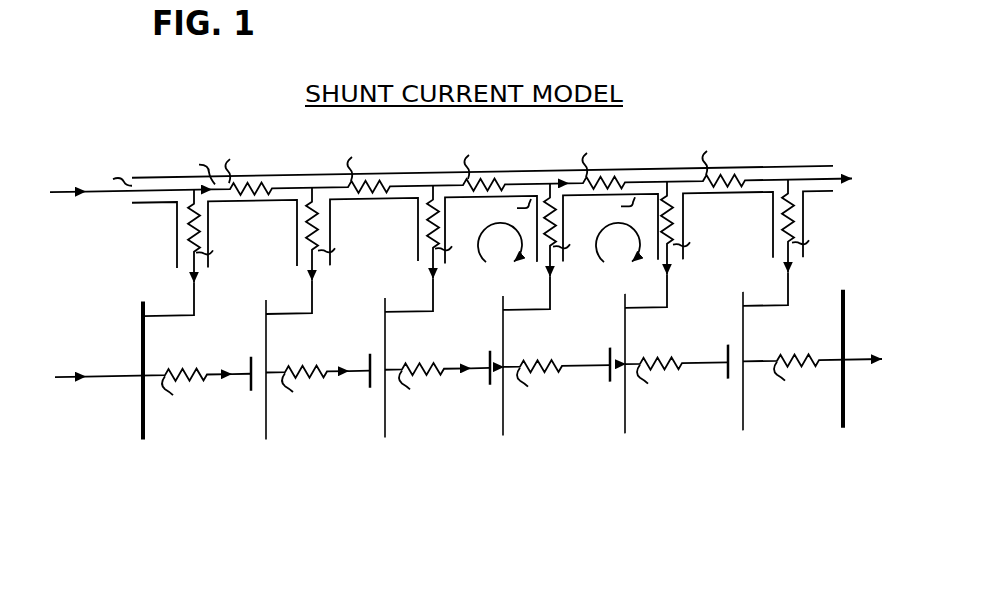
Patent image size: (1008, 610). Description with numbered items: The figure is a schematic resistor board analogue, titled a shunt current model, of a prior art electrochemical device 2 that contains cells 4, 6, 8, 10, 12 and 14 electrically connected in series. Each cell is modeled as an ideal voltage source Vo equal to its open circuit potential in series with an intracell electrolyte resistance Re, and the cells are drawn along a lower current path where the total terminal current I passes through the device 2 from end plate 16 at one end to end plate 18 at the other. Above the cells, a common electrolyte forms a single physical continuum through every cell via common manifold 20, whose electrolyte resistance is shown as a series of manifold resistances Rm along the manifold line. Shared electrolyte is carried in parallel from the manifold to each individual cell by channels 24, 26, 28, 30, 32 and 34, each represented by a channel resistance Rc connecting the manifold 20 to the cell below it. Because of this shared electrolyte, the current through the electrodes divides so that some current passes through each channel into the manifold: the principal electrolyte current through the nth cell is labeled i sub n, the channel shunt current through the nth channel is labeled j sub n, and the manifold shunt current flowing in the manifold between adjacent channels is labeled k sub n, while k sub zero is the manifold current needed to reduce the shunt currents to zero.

The electrochemical device 2 is at (106, 268).
The cell 4 is at (205, 446).
The cell 6 is at (338, 449).
The cell 8 is at (460, 443).
The cell 10 is at (578, 445).
The cell 12 is at (700, 443).
The cell 14 is at (800, 445).
The end plate 16 is at (143, 428).
The end plate 18 is at (845, 420).
The common manifold 20 is at (530, 178).
The channel 24 is at (177, 252).
The channel 26 is at (297, 259).
The channel 28 is at (418, 255).
The channel 30 is at (537, 265).
The channel 32 is at (658, 267).
The channel 34 is at (773, 245).